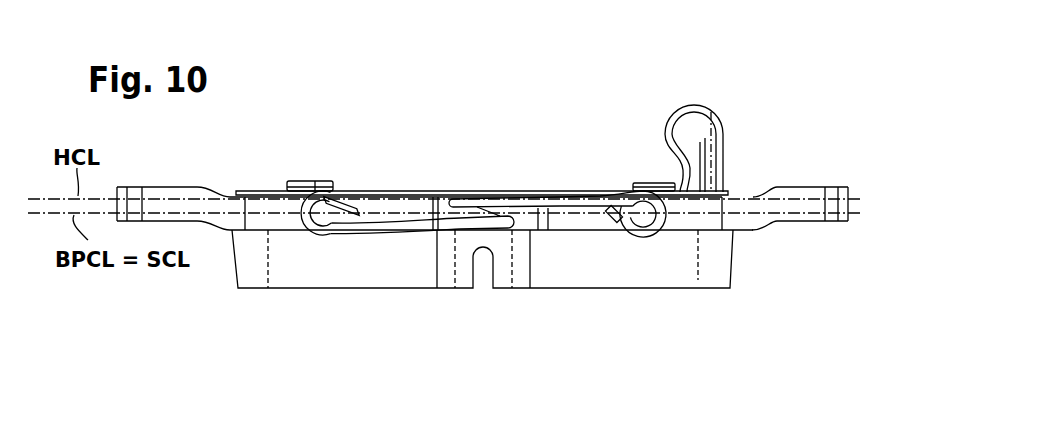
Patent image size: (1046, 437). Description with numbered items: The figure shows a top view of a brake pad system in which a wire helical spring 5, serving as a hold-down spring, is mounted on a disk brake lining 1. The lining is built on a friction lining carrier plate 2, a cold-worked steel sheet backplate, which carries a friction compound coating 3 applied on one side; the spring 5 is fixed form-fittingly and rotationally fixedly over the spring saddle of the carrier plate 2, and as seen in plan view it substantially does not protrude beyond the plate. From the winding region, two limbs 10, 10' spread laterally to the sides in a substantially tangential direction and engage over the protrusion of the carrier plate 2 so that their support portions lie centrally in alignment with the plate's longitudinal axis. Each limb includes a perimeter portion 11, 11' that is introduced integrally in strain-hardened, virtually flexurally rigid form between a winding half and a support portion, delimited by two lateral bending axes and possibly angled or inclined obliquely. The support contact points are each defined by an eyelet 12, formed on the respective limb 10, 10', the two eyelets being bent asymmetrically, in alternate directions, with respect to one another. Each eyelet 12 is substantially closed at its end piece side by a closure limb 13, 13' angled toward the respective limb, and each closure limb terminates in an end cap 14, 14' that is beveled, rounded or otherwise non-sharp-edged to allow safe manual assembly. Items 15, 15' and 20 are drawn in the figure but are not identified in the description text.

The friction lining 1 is at (469, 168).
The carrier plate 2 is at (267, 222).
The friction compound coating 3 is at (625, 262).
The wire helical spring 5 is at (553, 180).
The limb 10 is at (504, 275).
The limb 10' is at (480, 280).
The perimeter portion 11 is at (601, 272).
The perimeter portion 11' is at (396, 285).
The eyelet 12 is at (643, 191).
The closure limb 13 is at (608, 173).
The closure limb 13' is at (341, 169).
The end cap 14 is at (661, 272).
The end cap 14' is at (289, 272).
The tube section 15 is at (795, 270).
The tube section 15' is at (173, 270).
The spring clip 20 is at (712, 155).